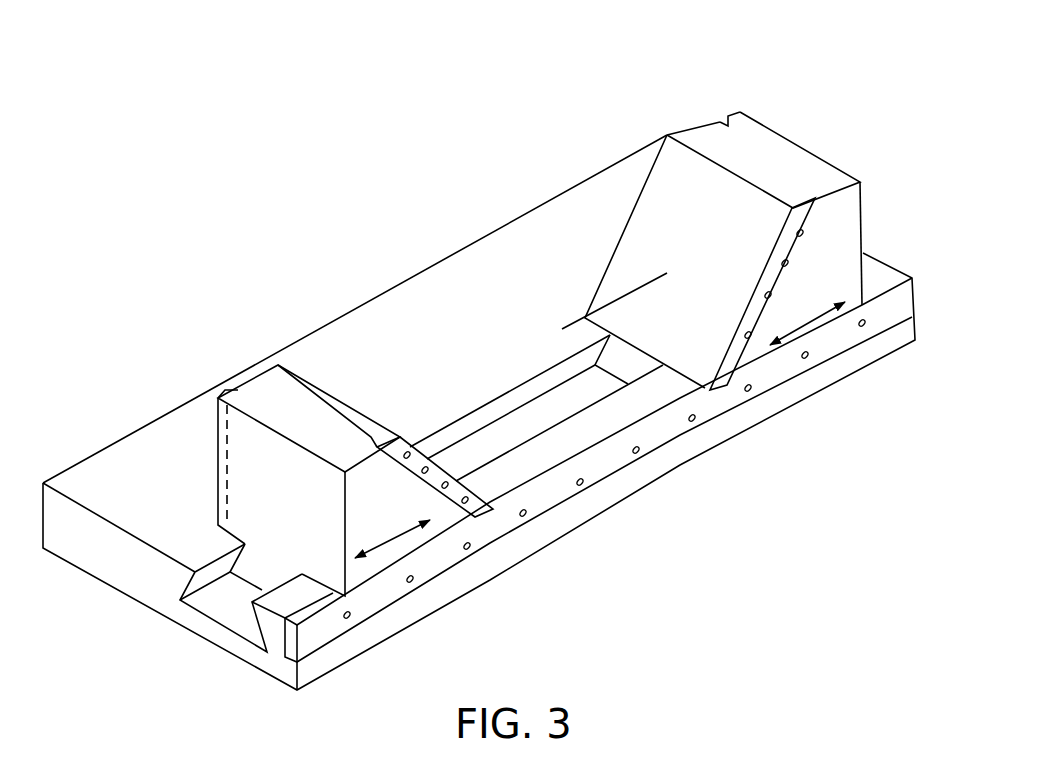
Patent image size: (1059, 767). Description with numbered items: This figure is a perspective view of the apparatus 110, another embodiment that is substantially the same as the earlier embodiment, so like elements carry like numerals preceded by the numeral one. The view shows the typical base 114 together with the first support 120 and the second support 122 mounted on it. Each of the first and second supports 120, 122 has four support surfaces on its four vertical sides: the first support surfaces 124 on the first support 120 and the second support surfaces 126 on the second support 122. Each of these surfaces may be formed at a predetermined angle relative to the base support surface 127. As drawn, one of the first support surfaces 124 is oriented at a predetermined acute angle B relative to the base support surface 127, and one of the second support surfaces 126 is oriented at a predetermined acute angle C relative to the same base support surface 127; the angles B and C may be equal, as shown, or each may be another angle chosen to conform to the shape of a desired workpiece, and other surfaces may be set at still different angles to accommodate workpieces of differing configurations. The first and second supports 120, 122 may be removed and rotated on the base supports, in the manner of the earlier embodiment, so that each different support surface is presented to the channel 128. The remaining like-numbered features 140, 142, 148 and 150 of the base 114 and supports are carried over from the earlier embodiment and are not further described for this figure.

The apparatus 110 is at (482, 358).
The base 114 is at (118, 560).
The first support 120 is at (775, 157).
The second support 122 is at (275, 392).
The first support surfaces 124 is at (865, 218).
The second support surfaces 126 is at (368, 422).
The base support surface 127 is at (493, 353).
The channel 128 is at (524, 250).
The dovetail channel 140 is at (225, 610).
The dovetail tongue 142 is at (647, 294).
The fastener holes / perforated strip 148 is at (723, 108).
The perforated strip 150 is at (452, 462).